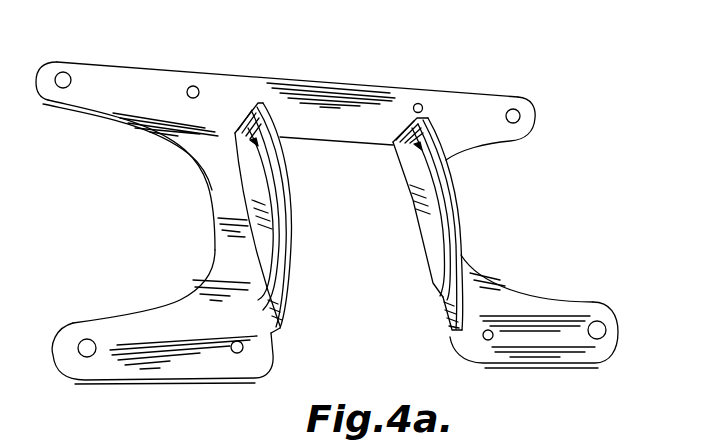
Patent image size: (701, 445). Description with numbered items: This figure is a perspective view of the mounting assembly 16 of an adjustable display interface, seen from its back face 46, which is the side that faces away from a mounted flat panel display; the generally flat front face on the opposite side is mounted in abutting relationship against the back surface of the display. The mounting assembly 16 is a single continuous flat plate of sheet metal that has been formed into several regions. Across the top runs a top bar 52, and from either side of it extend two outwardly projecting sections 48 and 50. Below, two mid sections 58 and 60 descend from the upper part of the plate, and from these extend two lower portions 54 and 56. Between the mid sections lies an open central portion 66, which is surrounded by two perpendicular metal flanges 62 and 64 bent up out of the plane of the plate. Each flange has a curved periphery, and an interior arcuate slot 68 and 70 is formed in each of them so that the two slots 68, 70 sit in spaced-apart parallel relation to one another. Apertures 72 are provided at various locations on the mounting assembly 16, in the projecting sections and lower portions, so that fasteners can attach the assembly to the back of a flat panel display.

The mounting assembly 16 is at (73, 50).
The back face 46 is at (120, 238).
The outwardly projecting section 48 is at (128, 84).
The outwardly projecting section 50 is at (480, 108).
The top bar 52 is at (343, 97).
The lower portion 54 is at (178, 362).
The lower portion 56 is at (537, 330).
The mid section 58 is at (214, 229).
The mid section 60 is at (468, 262).
The perpendicular metal flange 62 is at (291, 238).
The perpendicular metal flange 64 is at (457, 193).
The open central portion 66 is at (385, 265).
The interior arcuate slot 68 is at (253, 143).
The interior arcuate slot 70 is at (418, 147).
The apertures 72 is at (66, 77).